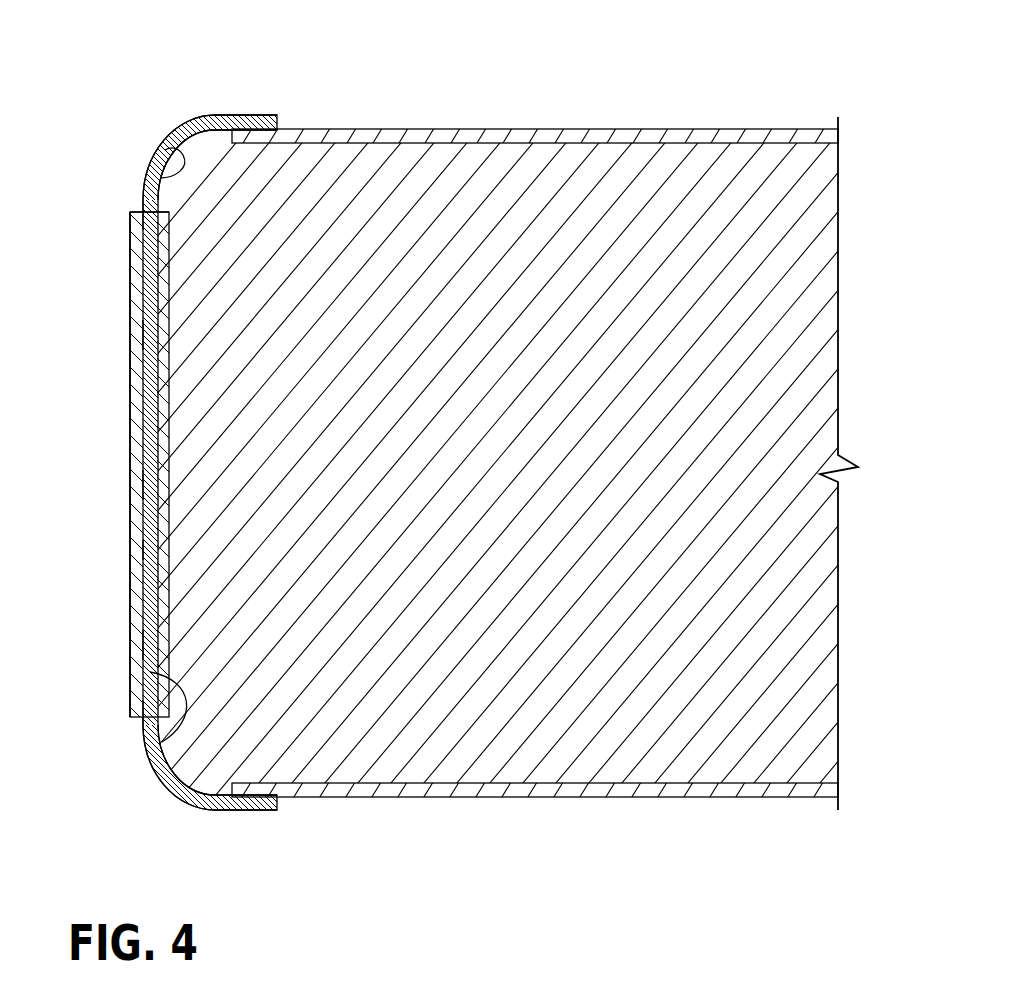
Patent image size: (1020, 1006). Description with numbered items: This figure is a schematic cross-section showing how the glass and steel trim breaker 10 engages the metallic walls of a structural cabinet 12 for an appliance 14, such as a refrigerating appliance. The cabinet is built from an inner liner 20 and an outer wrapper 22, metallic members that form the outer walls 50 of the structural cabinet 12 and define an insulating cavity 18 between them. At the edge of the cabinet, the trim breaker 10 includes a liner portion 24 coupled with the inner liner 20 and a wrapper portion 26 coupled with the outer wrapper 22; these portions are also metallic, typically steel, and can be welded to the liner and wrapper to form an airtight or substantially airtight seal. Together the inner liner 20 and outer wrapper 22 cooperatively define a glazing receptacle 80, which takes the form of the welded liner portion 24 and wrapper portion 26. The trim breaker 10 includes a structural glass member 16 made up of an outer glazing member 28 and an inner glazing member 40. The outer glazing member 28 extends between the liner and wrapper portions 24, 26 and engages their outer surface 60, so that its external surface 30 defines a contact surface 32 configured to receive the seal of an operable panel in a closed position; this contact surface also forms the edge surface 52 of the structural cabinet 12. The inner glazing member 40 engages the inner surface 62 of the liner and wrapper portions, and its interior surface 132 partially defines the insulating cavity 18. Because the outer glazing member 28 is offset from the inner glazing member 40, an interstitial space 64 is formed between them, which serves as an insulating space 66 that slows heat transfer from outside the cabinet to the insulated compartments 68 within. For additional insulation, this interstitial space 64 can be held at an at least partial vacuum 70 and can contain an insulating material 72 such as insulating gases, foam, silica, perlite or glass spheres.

The trim breaker 10 is at (142, 105).
The structural cabinet 12 is at (398, 92).
The appliance 14 is at (800, 78).
The structural glass member 16 is at (118, 519).
The insulating cavity 18 is at (760, 235).
The inner liner 20 is at (617, 798).
The outer wrapper 22 is at (685, 128).
The liner portion 24 is at (185, 798).
The wrapper portion 26 is at (183, 118).
The outer glazing member 28 is at (135, 366).
The external surface 30 is at (130, 598).
The contact surface 32 is at (130, 245).
The inner glazing member 40 is at (160, 740).
The outer walls 50 is at (556, 117).
The edge surface 52 is at (130, 442).
The outer surface 60 is at (145, 728).
The inner surface 62 is at (150, 185).
The interstitial space 64 is at (145, 548).
The insulating space 66 is at (150, 335).
The insulated compartments 68 is at (812, 843).
The at least partial vacuum 70 is at (147, 482).
The insulating material 72 is at (148, 642).
The glazing receptacle 80 is at (163, 795).
The interior surface 132 is at (170, 233).